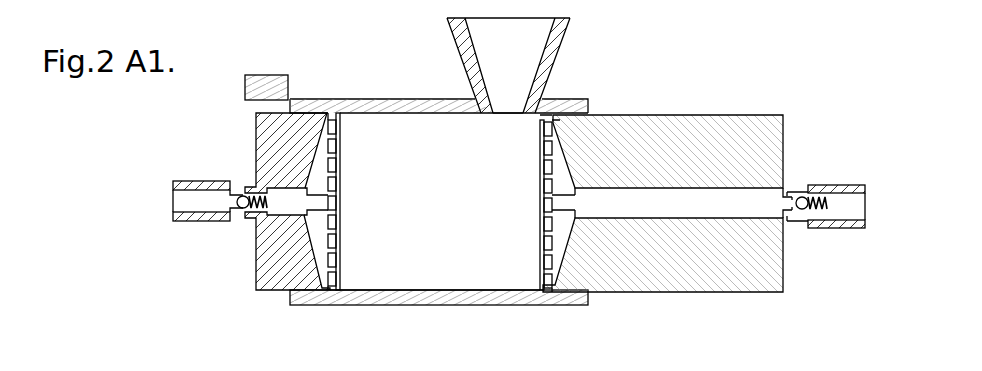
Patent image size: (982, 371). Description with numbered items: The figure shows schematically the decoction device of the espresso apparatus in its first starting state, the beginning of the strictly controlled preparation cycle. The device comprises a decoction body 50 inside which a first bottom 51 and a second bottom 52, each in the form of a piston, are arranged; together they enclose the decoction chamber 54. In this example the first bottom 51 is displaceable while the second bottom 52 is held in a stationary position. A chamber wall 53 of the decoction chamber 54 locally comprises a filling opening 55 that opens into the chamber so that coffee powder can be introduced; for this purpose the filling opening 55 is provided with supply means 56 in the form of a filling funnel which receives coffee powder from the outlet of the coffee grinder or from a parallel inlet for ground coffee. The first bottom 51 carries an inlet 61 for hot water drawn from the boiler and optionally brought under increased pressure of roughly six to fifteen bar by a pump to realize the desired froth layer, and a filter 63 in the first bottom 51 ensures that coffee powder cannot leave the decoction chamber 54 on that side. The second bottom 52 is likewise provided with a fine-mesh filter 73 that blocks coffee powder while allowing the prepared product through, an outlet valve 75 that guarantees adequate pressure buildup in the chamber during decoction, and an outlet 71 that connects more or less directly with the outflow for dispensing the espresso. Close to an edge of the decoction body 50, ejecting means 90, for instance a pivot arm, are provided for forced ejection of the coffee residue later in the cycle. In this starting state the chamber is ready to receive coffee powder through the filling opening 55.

The decoction body 50 is at (418, 297).
The first bottom 51 is at (263, 258).
The second bottom 52 is at (635, 280).
The chamber wall 53 is at (313, 108).
The decoction chamber 54 is at (408, 240).
The filling opening 55 is at (507, 110).
The supply means 56 is at (550, 55).
The inlet 61 is at (188, 203).
The filter 63 is at (337, 192).
The outlet 71 is at (840, 207).
The fine-mesh filter 73 is at (540, 250).
The outlet valve 75 is at (823, 200).
The ejecting means 90 is at (262, 90).